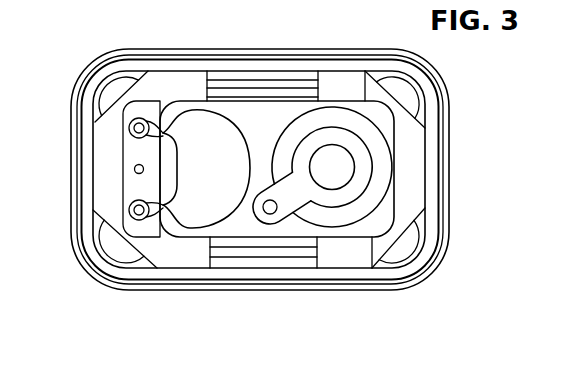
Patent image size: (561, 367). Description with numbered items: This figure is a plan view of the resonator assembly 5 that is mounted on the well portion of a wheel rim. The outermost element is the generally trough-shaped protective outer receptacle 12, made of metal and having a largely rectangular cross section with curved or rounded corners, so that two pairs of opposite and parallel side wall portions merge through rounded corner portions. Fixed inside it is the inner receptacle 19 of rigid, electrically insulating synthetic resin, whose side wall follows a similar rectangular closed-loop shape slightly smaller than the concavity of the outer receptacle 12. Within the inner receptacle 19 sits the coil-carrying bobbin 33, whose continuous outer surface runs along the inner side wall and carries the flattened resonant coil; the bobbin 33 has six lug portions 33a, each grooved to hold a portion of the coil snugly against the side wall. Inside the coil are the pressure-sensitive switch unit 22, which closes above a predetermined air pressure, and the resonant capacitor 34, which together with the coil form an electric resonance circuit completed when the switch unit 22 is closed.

The resonator assembly 5 is at (440, 69).
The protective outer receptacle 12 is at (277, 53).
The inner receptacle 19 is at (370, 66).
The pressure-sensitive switch unit 22 is at (380, 160).
The coil-carrying bobbin 33 is at (123, 97).
The lug portions 33a is at (182, 79).
The resonant capacitor 34 is at (188, 165).